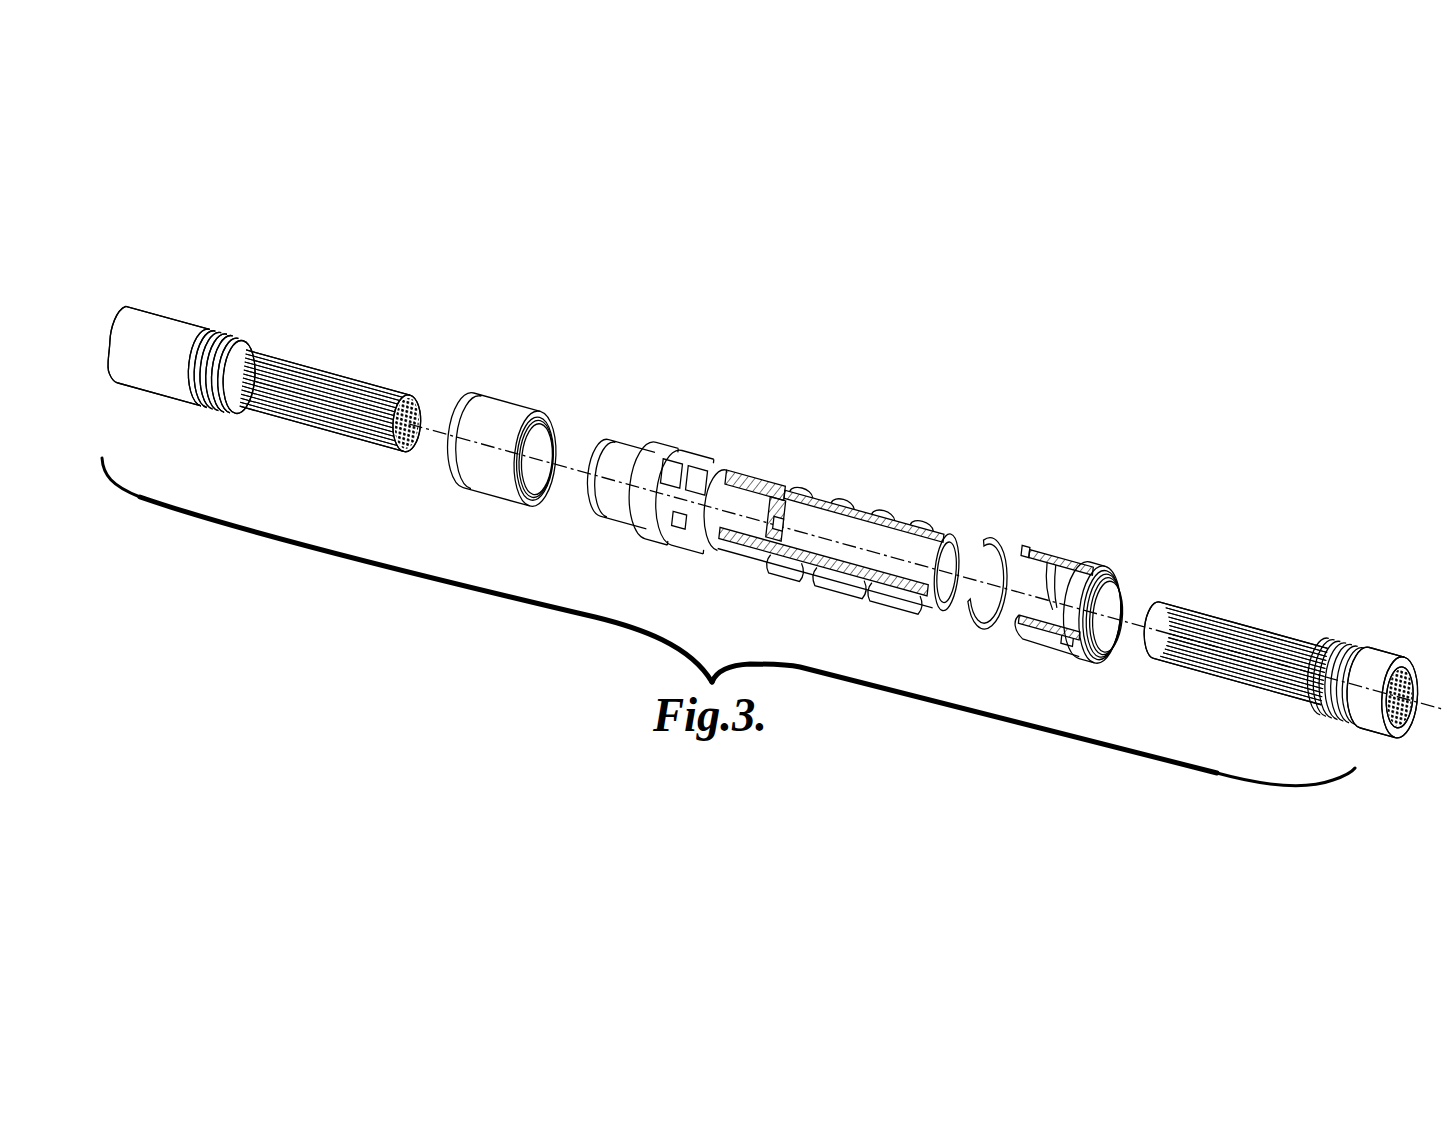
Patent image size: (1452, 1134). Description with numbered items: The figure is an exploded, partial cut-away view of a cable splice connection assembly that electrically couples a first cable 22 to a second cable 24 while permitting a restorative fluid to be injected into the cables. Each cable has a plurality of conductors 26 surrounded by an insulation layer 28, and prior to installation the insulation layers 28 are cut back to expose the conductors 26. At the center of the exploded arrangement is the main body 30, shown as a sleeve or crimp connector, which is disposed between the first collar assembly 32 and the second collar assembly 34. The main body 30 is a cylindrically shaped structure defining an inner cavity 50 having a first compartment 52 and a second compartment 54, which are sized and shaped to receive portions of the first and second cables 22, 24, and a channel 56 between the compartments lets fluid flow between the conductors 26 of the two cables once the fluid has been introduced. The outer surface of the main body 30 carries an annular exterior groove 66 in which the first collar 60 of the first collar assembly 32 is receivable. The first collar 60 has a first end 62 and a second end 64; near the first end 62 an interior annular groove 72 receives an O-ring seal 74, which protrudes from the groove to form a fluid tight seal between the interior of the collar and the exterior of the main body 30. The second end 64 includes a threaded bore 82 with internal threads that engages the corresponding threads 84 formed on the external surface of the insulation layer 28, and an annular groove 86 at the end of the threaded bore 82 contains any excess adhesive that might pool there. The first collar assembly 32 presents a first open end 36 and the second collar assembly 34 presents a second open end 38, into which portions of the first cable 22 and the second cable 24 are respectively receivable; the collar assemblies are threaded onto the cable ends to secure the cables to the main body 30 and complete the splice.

The first cable 22 is at (1278, 665).
The second cable 24 is at (238, 309).
The conductors 26 is at (326, 372).
The insulation layer 28 is at (146, 312).
The main body 30 is at (776, 519).
The first collar assembly 32 is at (1090, 589).
The second collar assembly 34 is at (741, 506).
The first open end 36 is at (1103, 616).
The second open end 38 is at (452, 412).
The inner cavity 50 is at (947, 572).
The first compartment 52 is at (831, 537).
The second compartment 54 is at (755, 485).
The channel 56 is at (778, 523).
The first collar 60 is at (1092, 612).
The first end 62 is at (1025, 551).
The second end 64 is at (1101, 615).
The annular exterior groove 66 is at (844, 584).
The interior annular groove 72 is at (1047, 635).
The O-ring seal 74 is at (979, 626).
The threaded bore 82 is at (1106, 616).
The threads 84 is at (1317, 710).
The annular groove 86 is at (1067, 640).